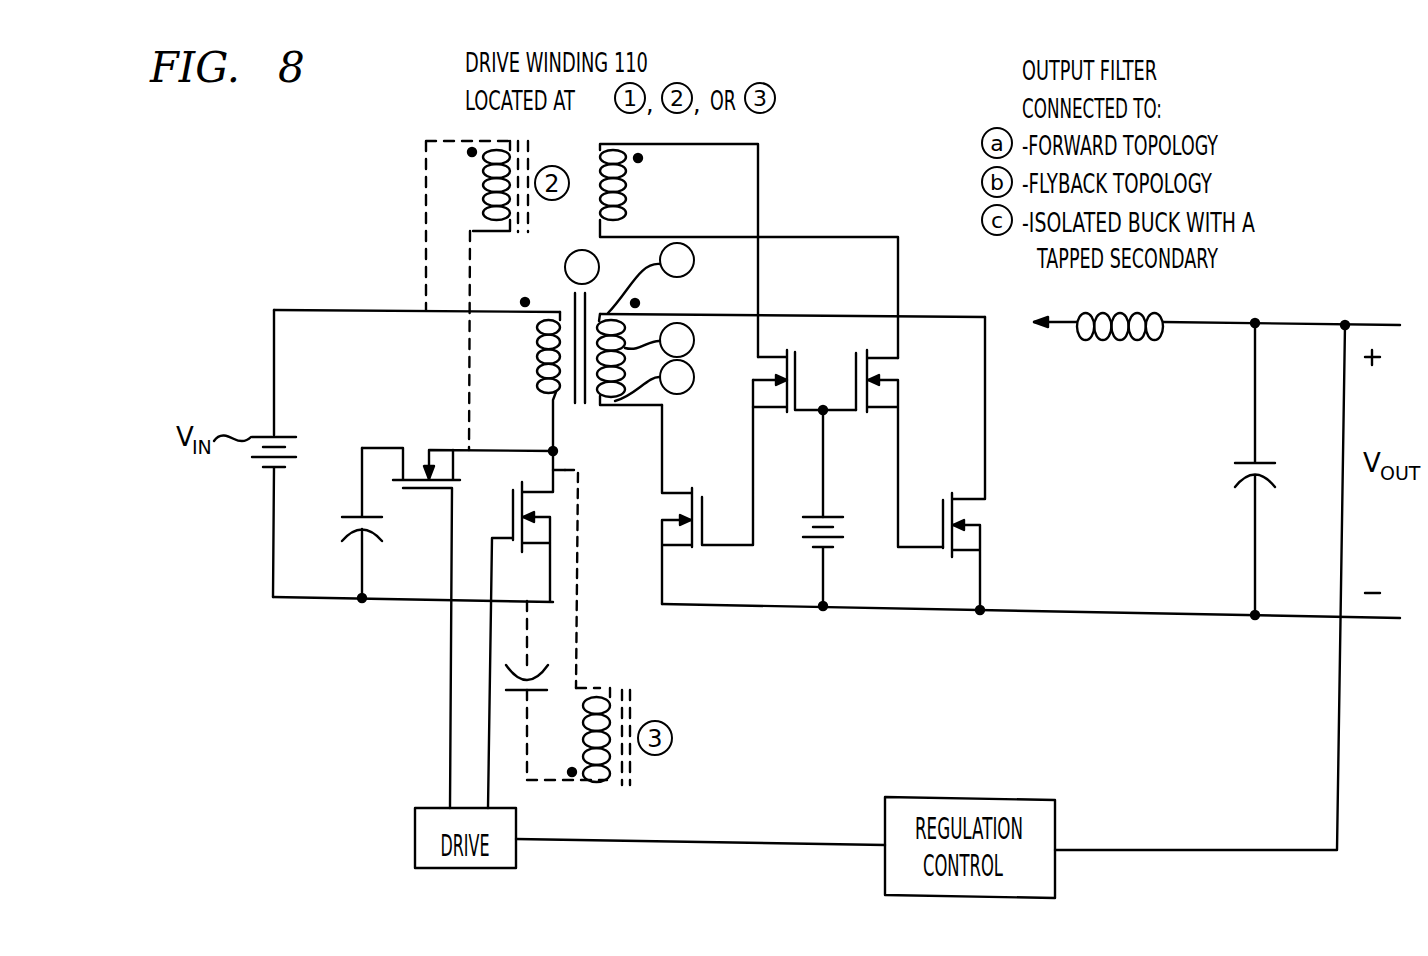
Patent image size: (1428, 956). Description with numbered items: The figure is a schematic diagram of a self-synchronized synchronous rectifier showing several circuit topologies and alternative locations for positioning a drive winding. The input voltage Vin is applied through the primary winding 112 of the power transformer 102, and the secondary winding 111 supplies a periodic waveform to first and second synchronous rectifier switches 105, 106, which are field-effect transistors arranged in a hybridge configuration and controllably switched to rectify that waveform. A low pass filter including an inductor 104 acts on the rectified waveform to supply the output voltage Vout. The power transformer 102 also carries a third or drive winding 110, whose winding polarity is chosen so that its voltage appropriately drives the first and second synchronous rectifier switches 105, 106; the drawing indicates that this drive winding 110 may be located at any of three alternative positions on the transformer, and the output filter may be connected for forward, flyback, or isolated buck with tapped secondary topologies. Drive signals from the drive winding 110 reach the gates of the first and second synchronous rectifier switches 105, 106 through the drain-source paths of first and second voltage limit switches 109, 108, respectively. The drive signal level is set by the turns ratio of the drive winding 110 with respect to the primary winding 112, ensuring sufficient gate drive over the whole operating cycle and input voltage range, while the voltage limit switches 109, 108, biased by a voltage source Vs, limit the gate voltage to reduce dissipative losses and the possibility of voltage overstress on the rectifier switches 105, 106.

The power transformer 102 is at (733, 347).
The inductor 104 is at (1130, 346).
The first synchronous rectifier switch 105 is at (986, 537).
The second synchronous rectifier switch 106 is at (660, 505).
The second voltage limit switch 108 is at (788, 418).
The first voltage limit switch 109 is at (899, 388).
The drive winding 110 is at (633, 185).
The secondary winding 111 is at (632, 326).
The primary winding 112 is at (540, 393).